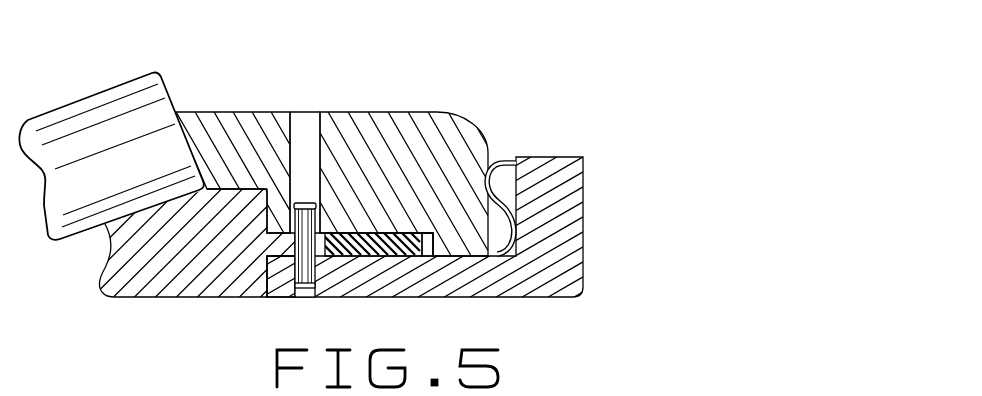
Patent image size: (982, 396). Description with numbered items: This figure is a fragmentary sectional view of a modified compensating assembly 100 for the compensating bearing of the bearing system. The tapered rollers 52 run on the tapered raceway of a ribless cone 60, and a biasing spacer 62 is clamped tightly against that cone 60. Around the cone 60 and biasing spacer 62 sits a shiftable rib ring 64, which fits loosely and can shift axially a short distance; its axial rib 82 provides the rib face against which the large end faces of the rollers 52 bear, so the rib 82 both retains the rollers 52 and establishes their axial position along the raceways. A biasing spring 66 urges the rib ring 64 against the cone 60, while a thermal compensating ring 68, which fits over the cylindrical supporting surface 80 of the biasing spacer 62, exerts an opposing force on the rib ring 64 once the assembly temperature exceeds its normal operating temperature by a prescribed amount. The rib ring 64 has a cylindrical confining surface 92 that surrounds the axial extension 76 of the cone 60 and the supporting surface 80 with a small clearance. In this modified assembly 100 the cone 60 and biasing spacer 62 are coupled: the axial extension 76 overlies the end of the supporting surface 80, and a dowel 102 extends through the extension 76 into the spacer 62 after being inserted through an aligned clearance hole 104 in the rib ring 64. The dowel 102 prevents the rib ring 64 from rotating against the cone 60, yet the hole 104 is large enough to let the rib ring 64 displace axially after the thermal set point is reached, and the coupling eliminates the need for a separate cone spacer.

The tapered rollers 52 is at (105, 109).
The ribless cone 60 is at (178, 275).
The biasing spacer 62 is at (522, 278).
The shiftable rib ring 64 is at (407, 123).
The biasing spring 66 is at (503, 160).
The thermal compensating ring 68 is at (395, 256).
The axial extension 76 is at (277, 258).
The cylindrical supporting surface 80 is at (368, 250).
The axial rib 82 is at (234, 130).
The cylindrical confining surface 92 is at (430, 256).
The modified compensating assembly 100 is at (325, 198).
The dowel 102 is at (313, 268).
The clearance hole 104 is at (303, 125).